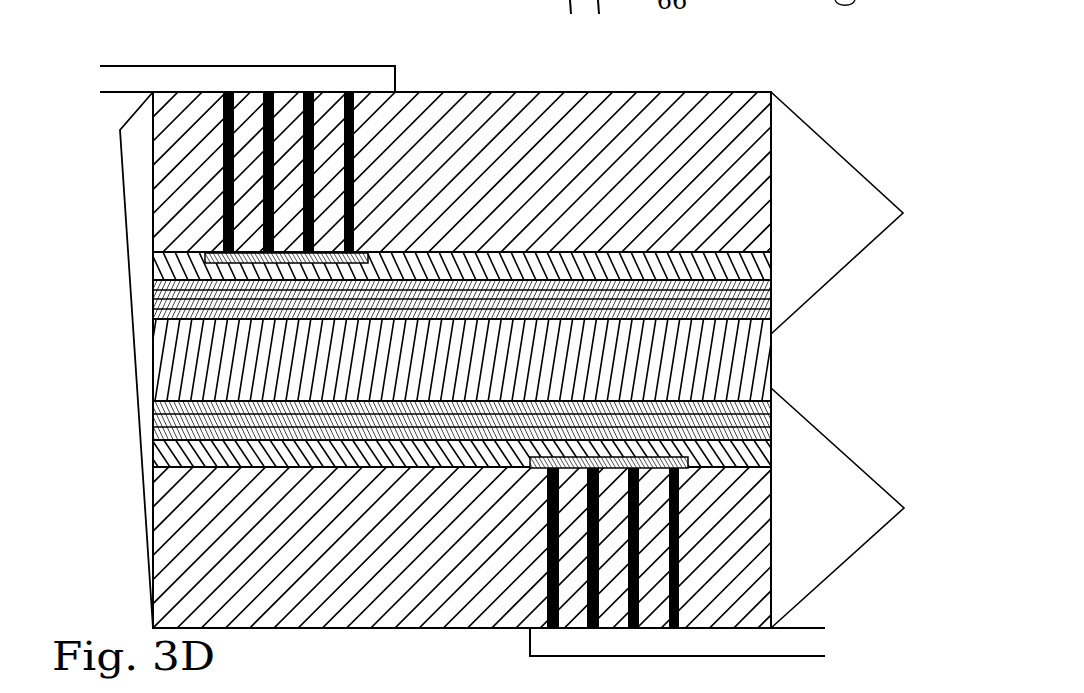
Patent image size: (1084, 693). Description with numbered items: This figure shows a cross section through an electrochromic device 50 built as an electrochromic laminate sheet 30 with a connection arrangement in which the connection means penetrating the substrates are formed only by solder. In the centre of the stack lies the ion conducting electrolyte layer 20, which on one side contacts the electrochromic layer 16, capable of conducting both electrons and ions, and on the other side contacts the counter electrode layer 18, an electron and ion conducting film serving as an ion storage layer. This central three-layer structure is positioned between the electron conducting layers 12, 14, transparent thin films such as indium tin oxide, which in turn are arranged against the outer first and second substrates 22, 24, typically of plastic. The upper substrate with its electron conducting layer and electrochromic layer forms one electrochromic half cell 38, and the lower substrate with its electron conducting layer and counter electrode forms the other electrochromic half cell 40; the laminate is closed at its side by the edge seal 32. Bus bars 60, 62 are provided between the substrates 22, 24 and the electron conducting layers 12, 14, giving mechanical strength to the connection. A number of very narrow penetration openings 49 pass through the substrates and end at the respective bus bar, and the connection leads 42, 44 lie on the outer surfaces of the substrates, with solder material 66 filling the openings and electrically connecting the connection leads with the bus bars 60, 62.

The electron conducting layer 12 is at (772, 277).
The electron conducting layer 14 is at (174, 468).
The electrochromic layer 16 is at (178, 300).
The counter electrode layer 18 is at (180, 420).
The electrolyte layer 20 is at (772, 357).
The first substrate 22 is at (440, 100).
The second substrate 24 is at (747, 530).
The electrochromic laminate sheet 30 is at (117, 360).
The edge seal 32 is at (772, 208).
The electrochromic half cell 38 is at (859, 213).
The electrochromic half cell 40 is at (859, 508).
The connection lead 42 is at (280, 75).
The connection lead 44 is at (545, 650).
The gap between electrode fingers 49 is at (345, 92).
The layered device 50 is at (832, 89).
The bus bar 60 is at (212, 256).
The bus bar 62 is at (688, 461).
The solder material 66 is at (343, 92).